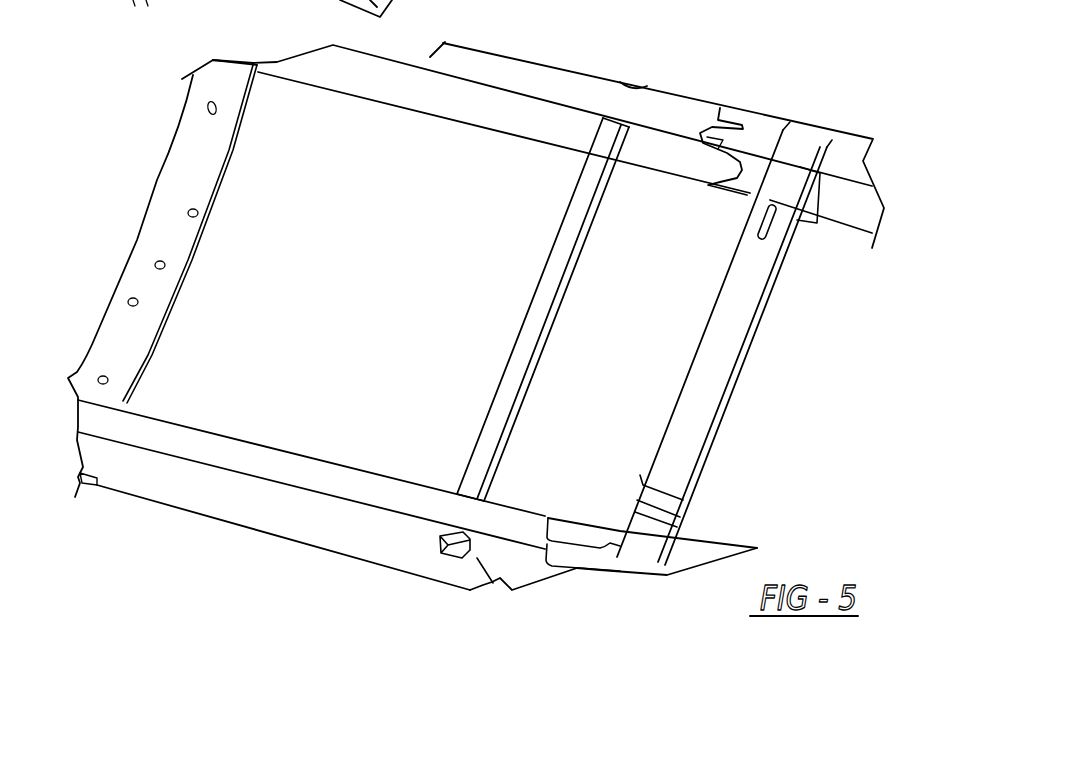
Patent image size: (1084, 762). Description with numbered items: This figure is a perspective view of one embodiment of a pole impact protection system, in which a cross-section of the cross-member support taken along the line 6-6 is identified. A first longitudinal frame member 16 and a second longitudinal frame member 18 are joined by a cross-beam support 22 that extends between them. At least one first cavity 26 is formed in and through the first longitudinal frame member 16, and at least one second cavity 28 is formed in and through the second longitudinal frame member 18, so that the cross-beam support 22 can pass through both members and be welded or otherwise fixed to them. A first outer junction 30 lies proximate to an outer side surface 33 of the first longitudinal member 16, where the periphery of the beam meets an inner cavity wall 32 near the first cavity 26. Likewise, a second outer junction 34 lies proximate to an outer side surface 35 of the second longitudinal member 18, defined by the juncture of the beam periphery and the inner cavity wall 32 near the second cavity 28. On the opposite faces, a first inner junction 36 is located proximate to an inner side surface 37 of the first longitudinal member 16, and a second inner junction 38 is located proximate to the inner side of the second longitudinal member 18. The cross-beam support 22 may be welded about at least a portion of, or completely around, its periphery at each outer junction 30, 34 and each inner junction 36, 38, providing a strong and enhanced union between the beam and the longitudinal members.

The first longitudinal frame member 16 is at (485, 65).
The second longitudinal frame member 18 is at (173, 478).
The cross-beam support 22 is at (545, 295).
The first cavity 26 is at (622, 80).
The second cavity 28 is at (440, 538).
The first outer junction 30 is at (640, 80).
The inner cavity wall 32 is at (460, 535).
The outer side surface 33 is at (803, 123).
The second outer junction 34 is at (497, 592).
The outer side surface 35 is at (245, 497).
The first inner junction 36 is at (588, 123).
The inner side surface 37 is at (448, 97).
The second inner junction 38 is at (448, 485).
The section line 6- 6 is at (532, 180).